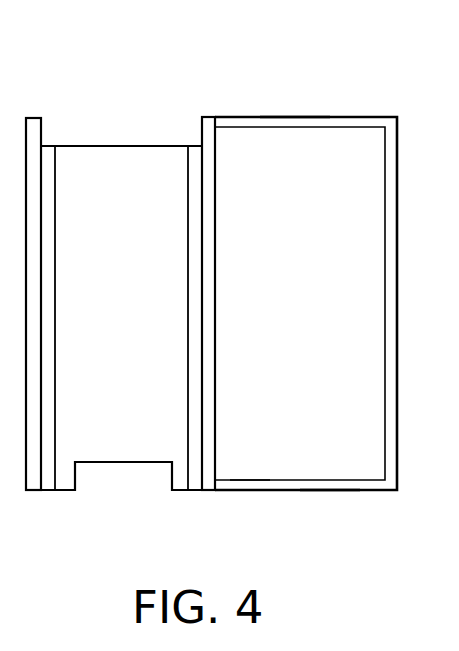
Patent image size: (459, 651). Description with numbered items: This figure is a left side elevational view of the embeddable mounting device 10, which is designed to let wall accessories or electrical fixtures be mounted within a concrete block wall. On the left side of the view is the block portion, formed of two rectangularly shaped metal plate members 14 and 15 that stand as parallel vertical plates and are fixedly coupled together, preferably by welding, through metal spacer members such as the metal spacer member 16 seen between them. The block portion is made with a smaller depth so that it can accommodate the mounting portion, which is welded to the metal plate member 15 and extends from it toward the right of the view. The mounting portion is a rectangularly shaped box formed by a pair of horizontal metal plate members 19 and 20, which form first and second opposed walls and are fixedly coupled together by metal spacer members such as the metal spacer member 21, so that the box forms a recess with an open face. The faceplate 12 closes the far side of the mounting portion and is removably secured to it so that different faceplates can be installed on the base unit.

The embeddable mounting device 10 is at (266, 84).
The faceplate 12 is at (396, 116).
The metal plate member 14 is at (32, 116).
The metal plate member 15 is at (205, 116).
The metal spacer member 16 is at (122, 145).
The horizontal metal plate member 19 is at (293, 116).
The horizontal metal plate member 20 is at (330, 490).
The metal spacer member 21 is at (243, 458).